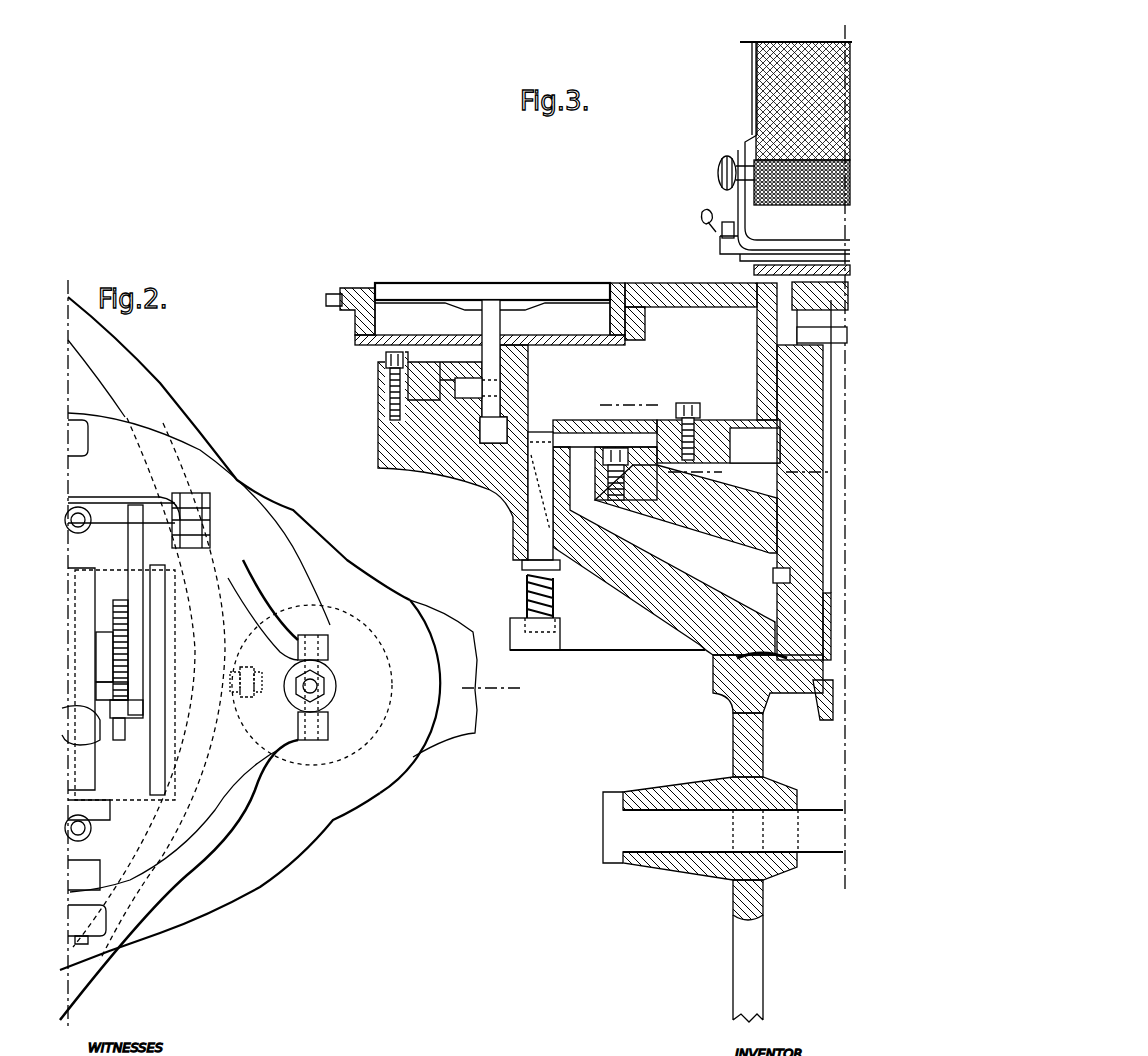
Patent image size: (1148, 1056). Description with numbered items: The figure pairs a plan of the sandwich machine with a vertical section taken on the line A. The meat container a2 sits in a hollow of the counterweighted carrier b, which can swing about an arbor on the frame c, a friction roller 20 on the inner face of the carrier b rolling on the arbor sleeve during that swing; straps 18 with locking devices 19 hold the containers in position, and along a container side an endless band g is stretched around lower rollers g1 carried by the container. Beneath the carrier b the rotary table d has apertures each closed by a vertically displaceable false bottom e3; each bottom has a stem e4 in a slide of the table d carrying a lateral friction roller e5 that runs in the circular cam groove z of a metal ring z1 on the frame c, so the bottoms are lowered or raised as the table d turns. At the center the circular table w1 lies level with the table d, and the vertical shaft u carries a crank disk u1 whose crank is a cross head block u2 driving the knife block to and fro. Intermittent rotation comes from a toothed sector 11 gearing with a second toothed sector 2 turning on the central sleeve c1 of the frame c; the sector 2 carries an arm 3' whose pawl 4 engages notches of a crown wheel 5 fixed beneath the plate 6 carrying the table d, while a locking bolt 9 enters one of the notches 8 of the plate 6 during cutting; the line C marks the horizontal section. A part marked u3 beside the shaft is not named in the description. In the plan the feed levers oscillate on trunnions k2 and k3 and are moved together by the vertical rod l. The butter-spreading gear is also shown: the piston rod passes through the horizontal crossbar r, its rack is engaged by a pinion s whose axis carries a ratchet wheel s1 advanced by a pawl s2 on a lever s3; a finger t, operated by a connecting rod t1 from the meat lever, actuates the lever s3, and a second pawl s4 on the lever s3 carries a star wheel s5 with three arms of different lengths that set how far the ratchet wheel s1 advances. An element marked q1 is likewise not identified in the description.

In FIG. 3, the endless band g is at (850, 46).
In FIG. 3, the lower roller g1 is at (762, 200).
In FIG. 3, the meat container a2 is at (755, 118).
In FIG. 3, the locking device 19 is at (703, 216).
In FIG. 3, the strap 18 is at (722, 232).
In FIG. 3, the cross head block u2 is at (795, 300).
In FIG. 3, the crank disk u1 is at (838, 343).
In FIG. 3, the false bottom e3 is at (490, 292).
In FIG. 3, the rotary table d is at (352, 292).
In FIG. 3, the circular table w1 is at (688, 302).
In FIG. 3, the frame c is at (447, 468).
In FIG. 3, the stem e4 is at (490, 328).
In FIG. 3, the friction roller e5 is at (468, 380).
In FIG. 3, the circular groove z is at (423, 372).
In FIG. 3, the metal ring z1 is at (462, 372).
In FIG. 3, the toothed sector 11 is at (493, 430).
In FIG. 3, the notch 8 is at (605, 434).
In FIG. 3, the plate 6 is at (658, 428).
In FIG. 3, the crown wheel 5 is at (720, 463).
In FIG. 3, the pawl 4 is at (650, 455).
In FIG. 3, the section line C— C is at (626, 403).
In FIG. 3, the arm 3' is at (686, 509).
In FIG. 3, the vertical shaft u is at (812, 480).
In FIG. 3, the central sleeve c1 is at (790, 575).
In FIG. 3, the locking bolt 9 is at (535, 541).
In FIG. 3, the section line A— A is at (532, 688).
In FIG. 3, the hub flange u3 is at (815, 700).
In FIG. 2, the toothed sector 2 is at (67, 641).
In FIG. 2, the carrier b is at (250, 633).
In FIG. 2, the vertical rod l is at (318, 686).
In FIG. 2, the friction roller 20 is at (242, 697).
In FIG. 2, the trunnion k3 is at (76, 438).
In FIG. 2, the connecting rod t1 is at (150, 515).
In FIG. 2, the finger t is at (136, 540).
In FIG. 2, the lever s3 is at (143, 620).
In FIG. 2, the horizontal crossbar r is at (86, 606).
In FIG. 2, the pawl s2 is at (118, 620).
In FIG. 2, the pinion s is at (80, 653).
In FIG. 2, the ratchet wheel s1 is at (110, 692).
In FIG. 2, the lever q1 is at (78, 706).
In FIG. 2, the star wheel s5 is at (132, 716).
In FIG. 2, the second pawl s4 is at (122, 740).
In FIG. 2, the trunnion k2 is at (98, 922).